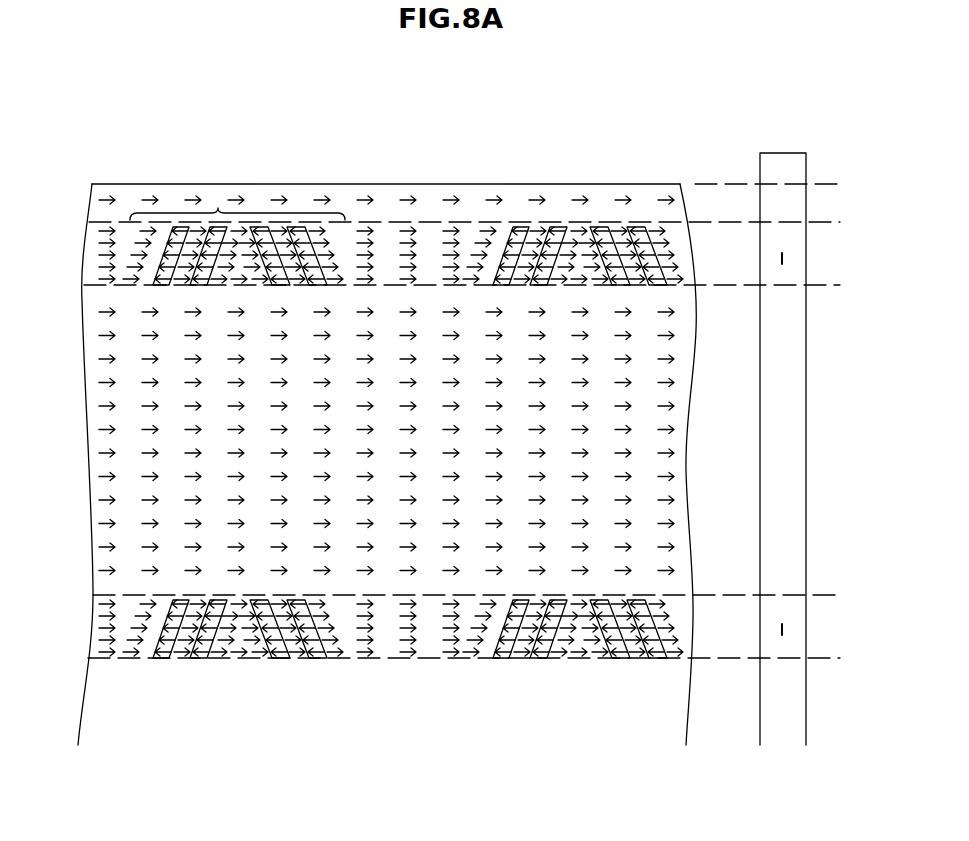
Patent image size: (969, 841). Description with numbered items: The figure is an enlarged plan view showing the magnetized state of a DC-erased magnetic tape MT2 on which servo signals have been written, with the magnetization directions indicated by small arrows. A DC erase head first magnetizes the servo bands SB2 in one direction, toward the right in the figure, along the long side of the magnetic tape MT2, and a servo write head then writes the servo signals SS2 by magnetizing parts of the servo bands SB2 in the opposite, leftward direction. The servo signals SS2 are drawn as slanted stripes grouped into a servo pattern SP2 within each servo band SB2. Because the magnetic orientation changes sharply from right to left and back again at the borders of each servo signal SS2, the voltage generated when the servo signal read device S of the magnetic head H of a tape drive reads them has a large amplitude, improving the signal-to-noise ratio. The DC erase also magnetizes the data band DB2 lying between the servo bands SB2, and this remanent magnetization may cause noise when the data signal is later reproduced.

The magnetic tape MT2 is at (133, 184).
The servo pattern SP2 is at (219, 208).
The servo band SB2 is at (433, 222).
The servo signal SS2 is at (685, 265).
The data band DB2 is at (654, 496).
The head H is at (784, 153).
The servo signal read device S is at (785, 259).